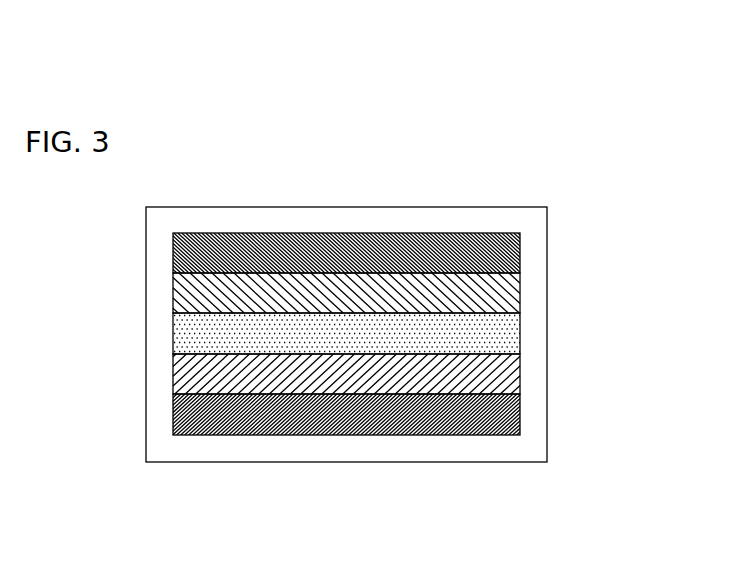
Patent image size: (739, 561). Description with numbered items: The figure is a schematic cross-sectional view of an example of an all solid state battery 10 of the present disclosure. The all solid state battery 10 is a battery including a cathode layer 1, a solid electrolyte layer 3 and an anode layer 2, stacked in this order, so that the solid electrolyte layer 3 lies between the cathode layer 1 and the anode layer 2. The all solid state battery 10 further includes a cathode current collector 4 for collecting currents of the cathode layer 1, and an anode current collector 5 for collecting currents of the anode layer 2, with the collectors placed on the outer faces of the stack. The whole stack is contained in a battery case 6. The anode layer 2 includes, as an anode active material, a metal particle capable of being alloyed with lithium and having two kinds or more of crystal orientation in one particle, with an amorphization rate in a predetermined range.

The all solid state battery 10 is at (546, 192).
The cathode current collector 4 is at (508, 252).
The cathode layer 1 is at (508, 291).
The solid electrolyte layer 3 is at (508, 332).
The anode layer 2 is at (508, 372).
The anode current collector 5 is at (508, 410).
The battery case 6 is at (533, 447).